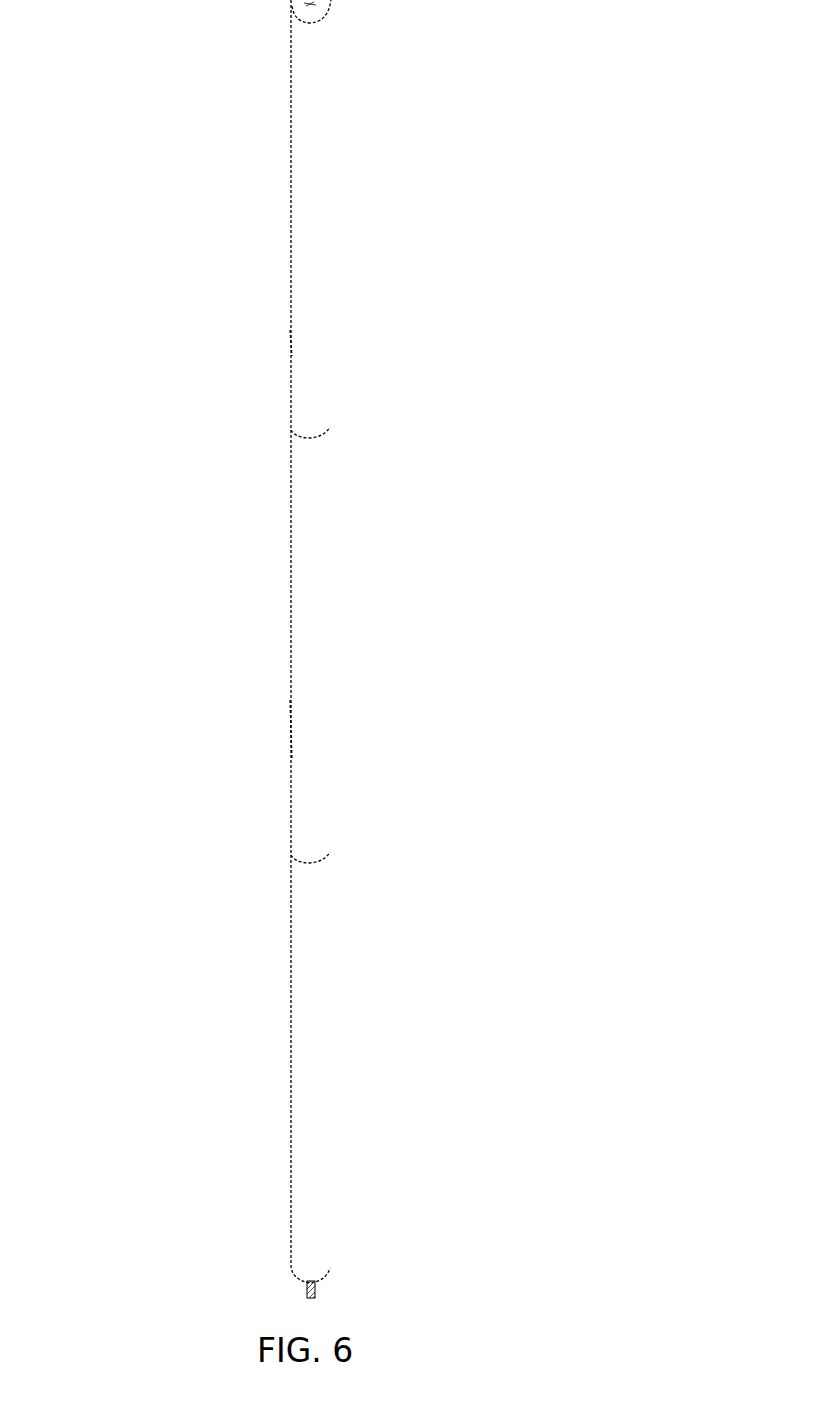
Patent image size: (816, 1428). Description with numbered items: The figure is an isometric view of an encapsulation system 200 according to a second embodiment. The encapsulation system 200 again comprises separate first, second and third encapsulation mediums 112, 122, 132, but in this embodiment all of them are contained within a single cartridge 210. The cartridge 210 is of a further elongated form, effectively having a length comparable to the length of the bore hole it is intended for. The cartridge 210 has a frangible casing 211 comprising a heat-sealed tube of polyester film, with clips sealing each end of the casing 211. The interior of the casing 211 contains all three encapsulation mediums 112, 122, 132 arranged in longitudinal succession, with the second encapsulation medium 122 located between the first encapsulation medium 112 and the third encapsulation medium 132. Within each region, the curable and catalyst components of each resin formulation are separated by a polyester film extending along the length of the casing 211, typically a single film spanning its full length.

The encapsulation system 200 is at (230, 203).
The first encapsulation medium 112 is at (318, 197).
The frangible casing 211 is at (292, 343).
The second encapsulation medium 122 is at (315, 652).
The cartridge 210 is at (209, 733).
The third encapsulation medium 132 is at (308, 1098).